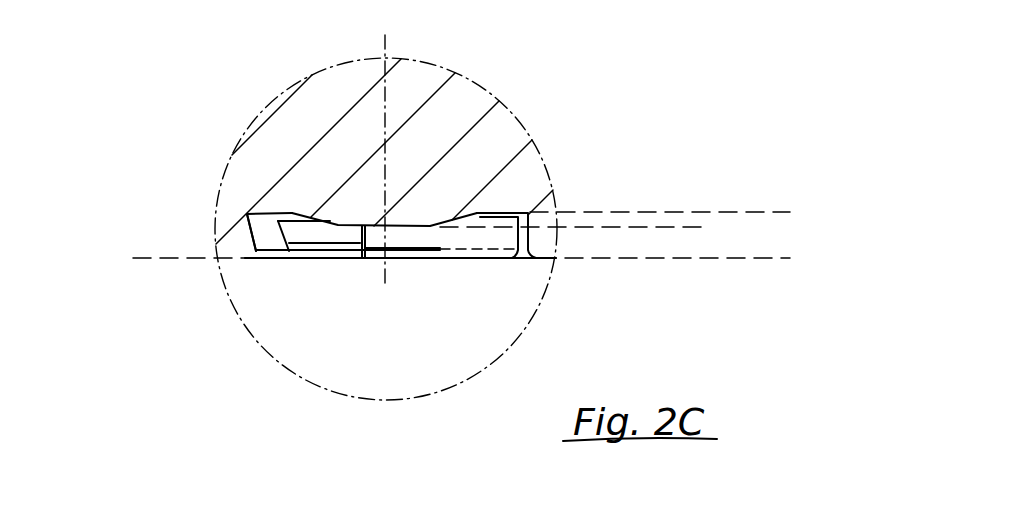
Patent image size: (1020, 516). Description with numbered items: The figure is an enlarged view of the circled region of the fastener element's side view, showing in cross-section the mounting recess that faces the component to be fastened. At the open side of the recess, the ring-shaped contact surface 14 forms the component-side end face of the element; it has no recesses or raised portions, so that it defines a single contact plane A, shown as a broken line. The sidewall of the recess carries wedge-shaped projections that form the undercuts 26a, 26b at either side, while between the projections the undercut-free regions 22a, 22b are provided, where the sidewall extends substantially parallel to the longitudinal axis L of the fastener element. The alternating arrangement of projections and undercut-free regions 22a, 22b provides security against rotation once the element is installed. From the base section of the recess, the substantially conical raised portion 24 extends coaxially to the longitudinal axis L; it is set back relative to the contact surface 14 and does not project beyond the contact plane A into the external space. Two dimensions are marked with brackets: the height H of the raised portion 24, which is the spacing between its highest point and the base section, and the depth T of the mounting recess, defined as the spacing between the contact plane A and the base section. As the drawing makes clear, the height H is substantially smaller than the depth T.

The contact surface 14 is at (551, 258).
The undercut-free region 22a is at (242, 248).
The undercut-free region 22b is at (419, 258).
The raised portion 24 is at (338, 225).
The undercut 26a is at (260, 230).
The undercut 26b is at (462, 227).
The longitudinal axis L is at (385, 83).
The height H is at (712, 227).
The depth T is at (792, 212).
The contact plane A is at (692, 258).